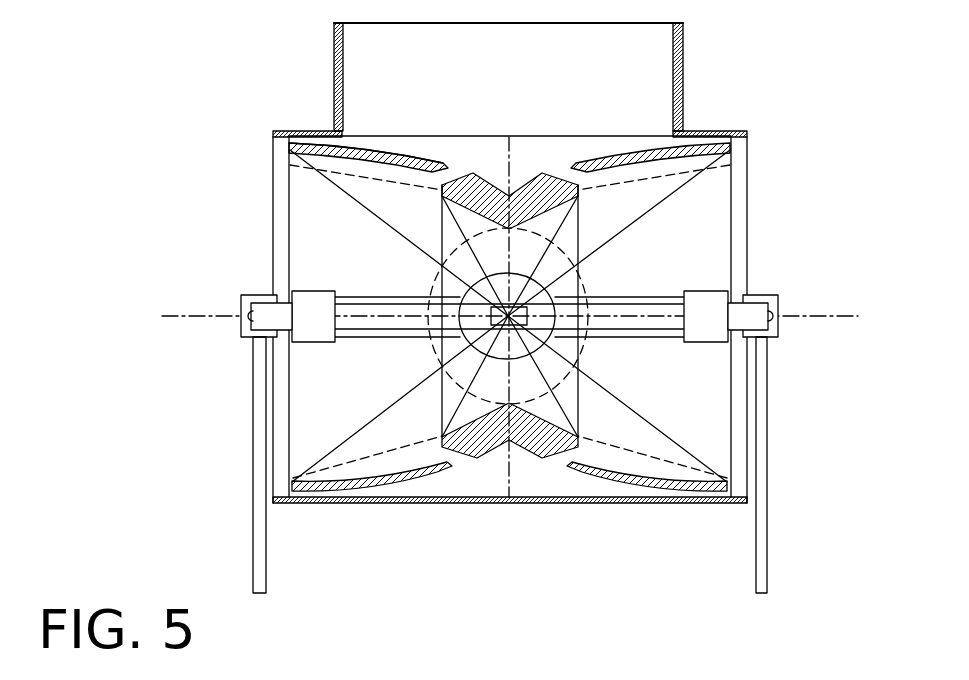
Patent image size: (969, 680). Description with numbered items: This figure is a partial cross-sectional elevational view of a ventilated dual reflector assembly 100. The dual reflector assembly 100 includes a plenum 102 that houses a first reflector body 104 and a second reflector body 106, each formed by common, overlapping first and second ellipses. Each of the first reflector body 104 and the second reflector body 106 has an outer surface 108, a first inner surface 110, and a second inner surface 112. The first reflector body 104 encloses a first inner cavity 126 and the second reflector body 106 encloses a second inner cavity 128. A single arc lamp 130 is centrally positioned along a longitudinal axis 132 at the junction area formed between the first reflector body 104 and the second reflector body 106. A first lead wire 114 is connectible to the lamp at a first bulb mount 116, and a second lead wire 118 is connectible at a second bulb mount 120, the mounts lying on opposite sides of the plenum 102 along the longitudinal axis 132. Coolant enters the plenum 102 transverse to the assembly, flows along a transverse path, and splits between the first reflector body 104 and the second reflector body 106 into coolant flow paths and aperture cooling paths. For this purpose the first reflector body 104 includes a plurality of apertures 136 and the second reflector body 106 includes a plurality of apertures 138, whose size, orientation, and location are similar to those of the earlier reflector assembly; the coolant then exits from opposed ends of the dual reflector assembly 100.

The dual reflector assembly 100 is at (205, 48).
The plenum 102 is at (307, 131).
The first reflector body 104 is at (322, 158).
The second reflector body 106 is at (703, 158).
The outer surface 108 is at (368, 146).
The first inner surface 110 is at (405, 155).
The second inner surface 112 is at (437, 233).
The first lead wire 114 is at (257, 530).
The first bulb mount 116 is at (258, 294).
The second lead wire 118 is at (767, 542).
The second bulb mount 120 is at (768, 296).
The first inner cavity 126 is at (403, 428).
The second inner cavity 128 is at (620, 438).
The arc lamp 130 is at (542, 265).
The longitudinal axis 132 is at (771, 340).
The apertures 136 is at (462, 468).
The apertures 138 is at (558, 462).